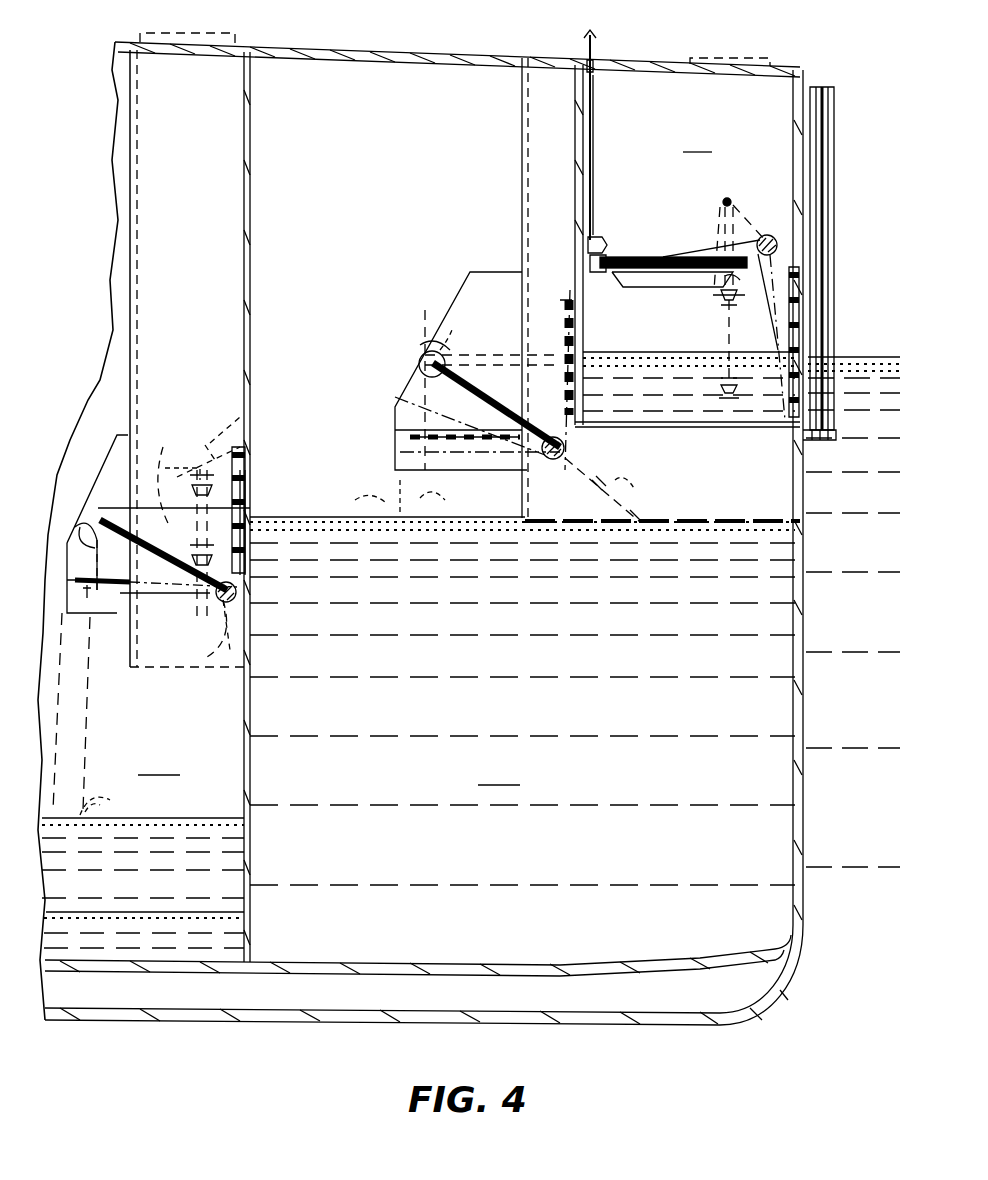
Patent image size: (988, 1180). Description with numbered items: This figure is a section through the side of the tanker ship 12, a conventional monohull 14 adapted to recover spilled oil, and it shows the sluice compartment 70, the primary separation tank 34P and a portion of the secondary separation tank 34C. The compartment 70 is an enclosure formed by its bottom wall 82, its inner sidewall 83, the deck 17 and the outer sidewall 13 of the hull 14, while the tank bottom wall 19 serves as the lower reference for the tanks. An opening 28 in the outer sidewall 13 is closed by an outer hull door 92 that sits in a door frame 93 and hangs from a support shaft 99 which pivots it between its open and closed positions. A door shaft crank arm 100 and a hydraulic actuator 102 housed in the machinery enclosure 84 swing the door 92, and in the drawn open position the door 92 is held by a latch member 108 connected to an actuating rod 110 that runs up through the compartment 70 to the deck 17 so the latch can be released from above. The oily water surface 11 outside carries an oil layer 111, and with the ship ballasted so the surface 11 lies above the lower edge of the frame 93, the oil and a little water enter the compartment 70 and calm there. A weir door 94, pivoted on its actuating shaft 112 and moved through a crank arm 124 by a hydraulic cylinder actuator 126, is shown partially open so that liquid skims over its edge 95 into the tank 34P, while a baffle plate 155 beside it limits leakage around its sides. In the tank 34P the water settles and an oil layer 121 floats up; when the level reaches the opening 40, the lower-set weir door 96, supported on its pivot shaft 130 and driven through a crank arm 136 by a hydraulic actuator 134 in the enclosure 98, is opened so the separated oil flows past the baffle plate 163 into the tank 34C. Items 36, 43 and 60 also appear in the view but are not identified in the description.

The oily water surface 11 is at (842, 356).
The tanker ship 12 is at (830, 48).
The outer sidewall of the hull 13 is at (803, 590).
The monohull 14 is at (803, 912).
The deck 17 is at (598, 65).
The tank bottom wall 19 is at (420, 970).
The closable port opening 28 is at (800, 282).
The bulkhead 36 is at (252, 752).
The opening 40 is at (250, 447).
The hull side 43 is at (113, 278).
The guide channel 60 is at (835, 128).
The sluice compartment 70 is at (643, 245).
The bottom wall 82 is at (640, 412).
The inner sidewall 83 is at (565, 135).
The machinery enclosure 84 is at (522, 105).
The outer hull door 92 is at (622, 244).
The door frame 93 is at (828, 432).
The weir door 94 is at (548, 298).
The door edge 95 is at (425, 355).
The weir door 96 is at (212, 428).
The enclosure 98 is at (120, 365).
The support shaft 99 is at (770, 245).
The door shaft crank arm 100 is at (744, 203).
The hydraulic actuator 102 is at (722, 318).
The latch member 108 is at (599, 357).
The actuating rod 110 is at (592, 95).
The oil layer 111 is at (452, 332).
The actuating shaft 112 is at (556, 462).
The oil layer 121 is at (262, 508).
The crank arm 124 is at (445, 498).
The hydraulic cylinder type actuator 126 is at (648, 490).
The pivot shaft 130 is at (225, 645).
The hydraulic cylinder type actuator 134 is at (173, 528).
The crank arm 136 is at (190, 672).
The baffle plate 155 is at (480, 273).
The baffle plate 163 is at (98, 447).
The secondary separation tank 34C is at (143, 780).
The primary separation tank 34P is at (522, 701).